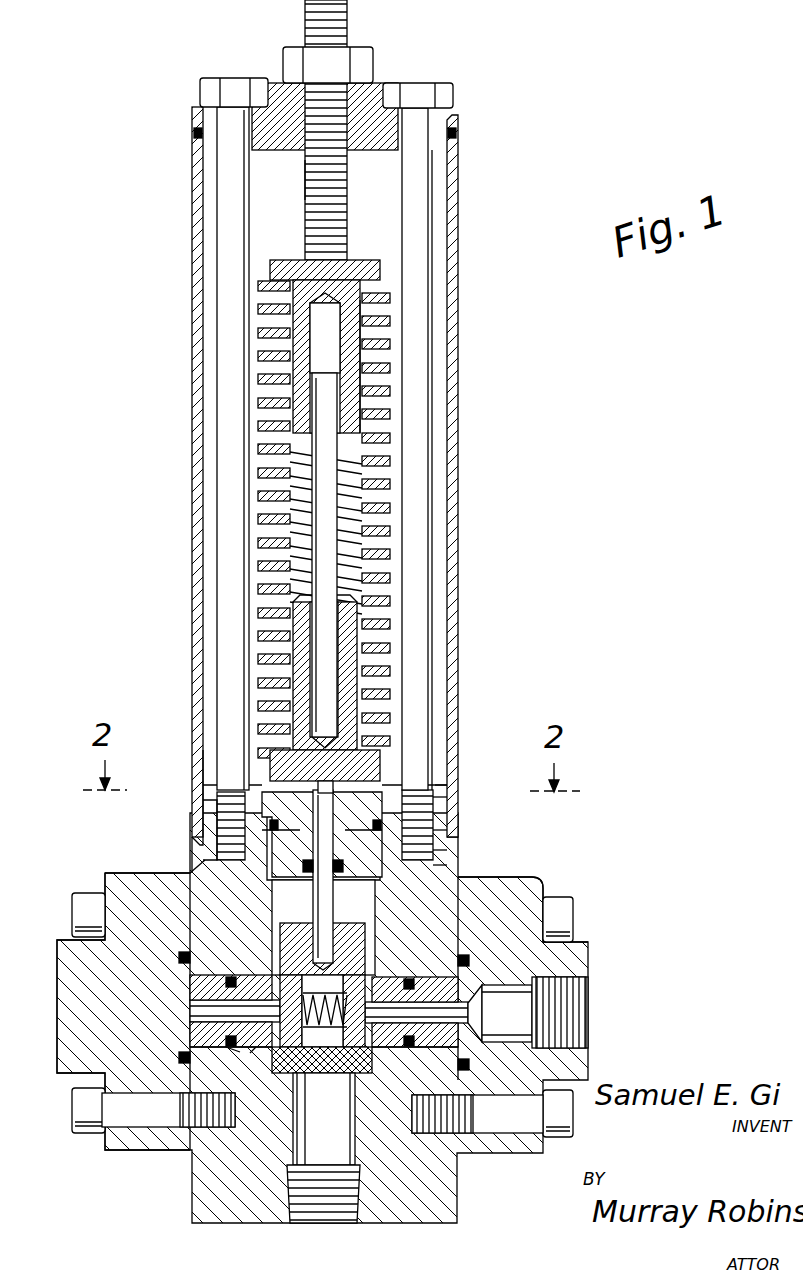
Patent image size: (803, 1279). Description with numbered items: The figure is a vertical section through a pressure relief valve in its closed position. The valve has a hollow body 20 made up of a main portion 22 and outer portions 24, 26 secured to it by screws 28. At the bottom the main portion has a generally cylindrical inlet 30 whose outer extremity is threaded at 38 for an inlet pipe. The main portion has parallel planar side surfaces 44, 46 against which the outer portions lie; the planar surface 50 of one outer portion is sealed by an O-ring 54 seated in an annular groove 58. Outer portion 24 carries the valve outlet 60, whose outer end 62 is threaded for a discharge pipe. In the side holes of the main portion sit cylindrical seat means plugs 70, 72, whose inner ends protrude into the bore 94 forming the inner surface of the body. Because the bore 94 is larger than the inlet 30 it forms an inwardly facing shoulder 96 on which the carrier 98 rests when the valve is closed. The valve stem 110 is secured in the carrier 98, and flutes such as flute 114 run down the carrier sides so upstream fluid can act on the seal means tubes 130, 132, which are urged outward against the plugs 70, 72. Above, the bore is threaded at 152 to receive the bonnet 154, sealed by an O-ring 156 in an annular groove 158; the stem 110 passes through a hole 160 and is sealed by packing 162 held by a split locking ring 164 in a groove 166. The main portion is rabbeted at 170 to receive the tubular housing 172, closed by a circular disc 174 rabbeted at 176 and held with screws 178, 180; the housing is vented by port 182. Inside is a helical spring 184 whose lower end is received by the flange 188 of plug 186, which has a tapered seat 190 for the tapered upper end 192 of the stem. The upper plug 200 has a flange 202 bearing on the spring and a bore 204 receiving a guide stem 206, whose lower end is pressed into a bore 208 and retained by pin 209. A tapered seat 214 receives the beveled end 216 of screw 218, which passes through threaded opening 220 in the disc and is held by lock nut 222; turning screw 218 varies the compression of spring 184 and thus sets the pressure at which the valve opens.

The hollow body 20 is at (540, 863).
The main portion 22 is at (458, 900).
The outer portion 24 is at (535, 884).
The outer portion 26 is at (108, 875).
The screws 28 is at (72, 908).
The inlet 30 is at (324, 1119).
The threaded extremity of inlet 38 is at (357, 1205).
The planar side surface 44 is at (458, 852).
The planar side surface 46 is at (192, 846).
The planar surface 50 is at (188, 1070).
The O-ring 54 is at (178, 957).
The annular groove 58 is at (182, 1056).
The valve outlet 60 is at (522, 1030).
The outer end of outlet 62 is at (578, 1020).
The plug 70 is at (405, 988).
The plug 72 is at (202, 985).
The bore 94 is at (383, 910).
The shoulder 96 is at (357, 1087).
The carrier 98 is at (263, 1125).
The valve stem 110 is at (190, 873).
The flute 114 is at (367, 940).
The tube 130 is at (338, 1125).
The tube 132 is at (257, 1048).
The threads 152 is at (262, 878).
The bonnet 154 is at (213, 792).
The O-ring 156 is at (432, 835).
The annular groove 158 is at (445, 867).
The hole 160 is at (445, 787).
The packing 162 is at (435, 866).
The split locking ring 164 is at (452, 866).
The groove 166 is at (303, 883).
The rabbet 170 is at (213, 818).
The tubular housing 172 is at (462, 541).
The circular disc 174 is at (372, 128).
The rabbet 176 is at (457, 136).
The screw 178 is at (418, 207).
The screw 180 is at (215, 184).
The vent port 182 is at (193, 745).
The helical spring 184 is at (385, 418).
The plug 186 is at (378, 727).
The flange 188 is at (333, 785).
The tapered seat 190 is at (245, 785).
The tapered upper end 192 is at (437, 786).
The plug 200 is at (380, 313).
The flange 202 is at (365, 272).
The bore 204 is at (338, 330).
The guide stem 206 is at (336, 470).
The bore 208 is at (357, 626).
The pin 209 is at (355, 653).
The tapered seat 214 is at (340, 268).
The beveled end 216 is at (318, 262).
The screw 218 is at (306, 180).
The threaded opening 220 is at (305, 100).
The lock nut 222 is at (285, 60).